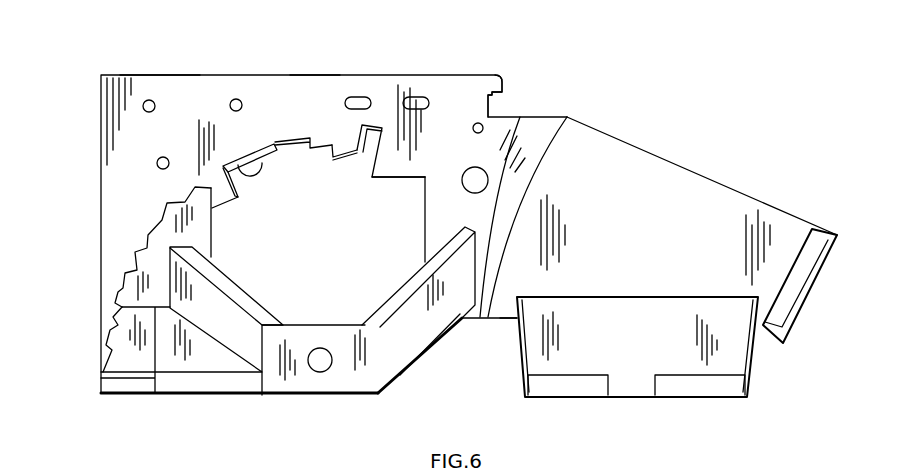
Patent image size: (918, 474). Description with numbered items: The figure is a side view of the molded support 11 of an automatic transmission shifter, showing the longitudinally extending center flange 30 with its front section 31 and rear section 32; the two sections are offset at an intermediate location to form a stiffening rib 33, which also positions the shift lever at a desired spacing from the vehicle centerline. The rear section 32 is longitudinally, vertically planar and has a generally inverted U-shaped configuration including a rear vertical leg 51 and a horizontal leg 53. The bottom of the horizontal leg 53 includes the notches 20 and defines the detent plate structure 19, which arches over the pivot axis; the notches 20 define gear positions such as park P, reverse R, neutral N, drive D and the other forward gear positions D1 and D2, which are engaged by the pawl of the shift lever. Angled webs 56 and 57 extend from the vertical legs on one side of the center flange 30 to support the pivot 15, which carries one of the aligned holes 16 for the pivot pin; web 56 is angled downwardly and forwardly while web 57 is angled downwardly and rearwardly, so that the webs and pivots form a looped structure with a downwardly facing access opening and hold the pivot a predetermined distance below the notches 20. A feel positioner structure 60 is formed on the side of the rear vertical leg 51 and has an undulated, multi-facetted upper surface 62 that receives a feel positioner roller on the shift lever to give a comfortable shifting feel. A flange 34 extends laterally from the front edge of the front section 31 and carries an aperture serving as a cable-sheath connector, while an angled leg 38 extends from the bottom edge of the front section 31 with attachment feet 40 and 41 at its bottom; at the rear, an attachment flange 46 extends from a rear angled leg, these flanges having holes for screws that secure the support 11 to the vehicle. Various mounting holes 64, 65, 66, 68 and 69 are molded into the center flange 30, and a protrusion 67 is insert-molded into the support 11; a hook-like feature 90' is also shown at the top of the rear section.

The support 11 is at (703, 114).
The pivot 15 is at (360, 383).
The aligned holes 16 is at (320, 372).
The detent plate structure 19 is at (313, 100).
The notches 20 is at (233, 163).
The center flange 30 is at (569, 116).
The front section 31 is at (720, 183).
The rear section 32 is at (163, 74).
The stiffening rib 33 is at (530, 170).
The flange 34 is at (800, 313).
The angled leg 38 is at (643, 348).
The attachment flange 40 is at (570, 387).
The attachment flange 41 is at (690, 387).
The attachment flange 46 is at (130, 387).
The rear vertical leg 51 is at (101, 184).
The horizontal leg 53 is at (288, 120).
The angled web 56 is at (250, 305).
The angled web 57 is at (423, 335).
The feel positioner structure 60 is at (210, 243).
The undulated upper surface 62 is at (155, 231).
The hole 64 is at (157, 160).
The hole 65 is at (154, 103).
The hole 66 is at (241, 101).
The protrusion 67 is at (485, 170).
The hole 68 is at (362, 97).
The hole 69 is at (420, 97).
The hook 90' is at (531, 82).
The drive gear position D is at (280, 152).
The forward gear position D1 is at (239, 198).
The forward gear position D2 is at (217, 210).
The neutral gear position N is at (302, 152).
The park gear position P is at (368, 150).
The reverse gear position R is at (325, 157).